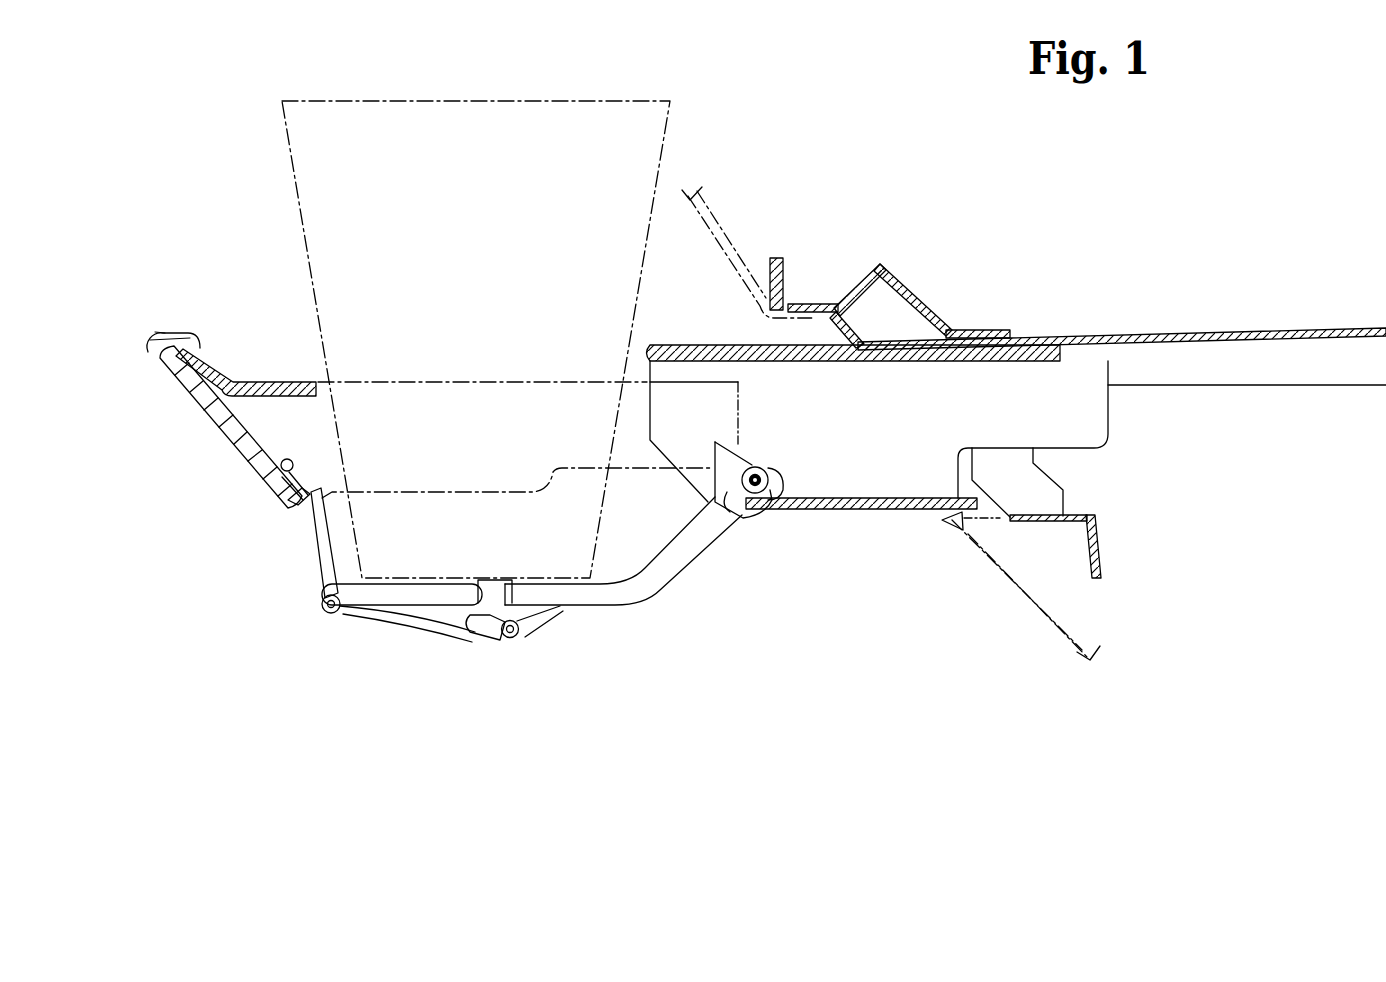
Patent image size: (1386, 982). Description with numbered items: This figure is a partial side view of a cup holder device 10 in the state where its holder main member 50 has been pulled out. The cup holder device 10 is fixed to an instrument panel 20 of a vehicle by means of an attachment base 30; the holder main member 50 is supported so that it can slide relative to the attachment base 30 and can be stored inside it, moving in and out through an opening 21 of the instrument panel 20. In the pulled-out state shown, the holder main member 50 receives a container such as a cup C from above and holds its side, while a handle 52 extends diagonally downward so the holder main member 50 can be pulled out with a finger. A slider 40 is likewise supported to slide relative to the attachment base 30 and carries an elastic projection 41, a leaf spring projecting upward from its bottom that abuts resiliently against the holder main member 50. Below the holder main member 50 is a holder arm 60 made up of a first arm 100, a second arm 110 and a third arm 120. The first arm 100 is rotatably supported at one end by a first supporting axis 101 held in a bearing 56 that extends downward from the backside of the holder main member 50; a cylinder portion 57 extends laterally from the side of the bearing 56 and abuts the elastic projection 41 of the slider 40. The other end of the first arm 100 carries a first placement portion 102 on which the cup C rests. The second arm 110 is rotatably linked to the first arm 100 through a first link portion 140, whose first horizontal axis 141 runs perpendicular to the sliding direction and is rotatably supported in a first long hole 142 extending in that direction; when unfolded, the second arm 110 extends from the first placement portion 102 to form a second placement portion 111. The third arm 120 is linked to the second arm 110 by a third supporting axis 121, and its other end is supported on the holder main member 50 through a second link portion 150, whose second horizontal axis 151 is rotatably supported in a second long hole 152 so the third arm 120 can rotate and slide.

The cup C is at (615, 150).
The cup holder device 10 is at (1003, 268).
The instrument panel 20 is at (718, 250).
The opening 21 is at (947, 520).
The attachment base 30 is at (1228, 330).
The slider 40 is at (1090, 425).
The elastic projection 41 is at (803, 495).
The holder main member 50 is at (270, 380).
The handle 52 is at (200, 402).
The bearing 56 is at (740, 456).
The cylinder portion 57 is at (735, 517).
The holder arm 60 is at (735, 638).
The first arm 100 is at (692, 545).
The first supporting axis 101 is at (778, 480).
The first placement portion 102 is at (614, 607).
The second arm 110 is at (375, 597).
The second placement portion 111 is at (455, 618).
The third arm 120 is at (322, 540).
The third supporting axis 121 is at (330, 616).
The first link portion 140 is at (572, 688).
The first horizontal axis 141 is at (518, 638).
The first long hole 142 is at (476, 632).
The second link portion 150 is at (258, 510).
The second horizontal axis 151 is at (287, 493).
The second long hole 152 is at (248, 446).